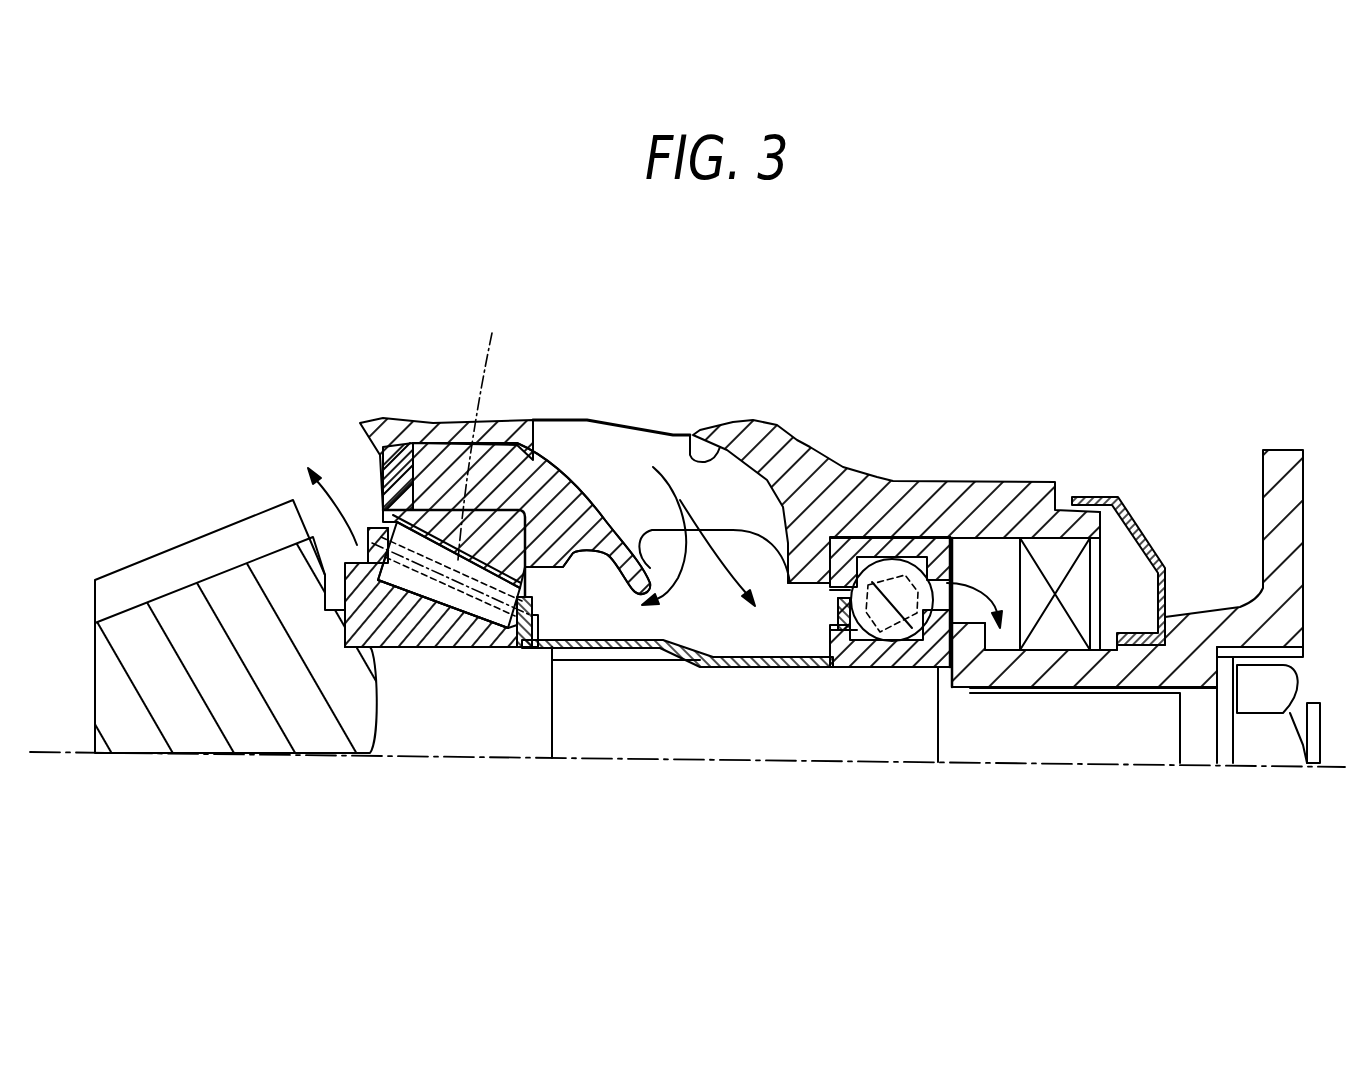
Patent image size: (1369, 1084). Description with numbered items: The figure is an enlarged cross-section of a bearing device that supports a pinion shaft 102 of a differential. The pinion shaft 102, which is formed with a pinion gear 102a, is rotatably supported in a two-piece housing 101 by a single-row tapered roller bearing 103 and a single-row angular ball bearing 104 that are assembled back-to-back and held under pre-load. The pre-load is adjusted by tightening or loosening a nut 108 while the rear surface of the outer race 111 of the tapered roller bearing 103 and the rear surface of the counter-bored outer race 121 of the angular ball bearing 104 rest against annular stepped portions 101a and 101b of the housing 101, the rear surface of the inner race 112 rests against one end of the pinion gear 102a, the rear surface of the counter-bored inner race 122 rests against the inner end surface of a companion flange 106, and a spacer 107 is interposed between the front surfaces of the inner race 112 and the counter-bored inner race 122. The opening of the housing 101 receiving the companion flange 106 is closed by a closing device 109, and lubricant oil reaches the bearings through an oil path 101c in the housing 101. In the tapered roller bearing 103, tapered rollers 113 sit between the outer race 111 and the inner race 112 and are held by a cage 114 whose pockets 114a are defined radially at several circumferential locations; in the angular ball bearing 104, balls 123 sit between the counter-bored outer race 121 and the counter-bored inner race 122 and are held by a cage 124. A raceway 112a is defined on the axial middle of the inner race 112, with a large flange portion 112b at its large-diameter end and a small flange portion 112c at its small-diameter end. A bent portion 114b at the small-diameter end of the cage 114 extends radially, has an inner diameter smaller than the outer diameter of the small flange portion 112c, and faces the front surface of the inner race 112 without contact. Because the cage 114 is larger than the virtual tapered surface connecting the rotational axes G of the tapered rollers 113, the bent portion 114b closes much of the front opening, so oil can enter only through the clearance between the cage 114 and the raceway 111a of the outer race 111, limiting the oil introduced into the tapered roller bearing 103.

The housing 101 is at (818, 434).
The annular stepped portion 101a is at (547, 553).
The annular stepped portion 101b is at (818, 572).
The oil path 101c is at (692, 435).
The pinion shaft 102 is at (722, 740).
The pinion gear 102a is at (150, 578).
The tapered roller bearing 103 is at (394, 678).
The angular ball bearing 104 is at (907, 684).
The companion flange 106 is at (1203, 625).
The spacer 107 is at (690, 650).
The nut 108 is at (1292, 694).
The closing device 109 is at (1048, 557).
The outer race 111 is at (530, 472).
The raceway 111a is at (576, 505).
The inner race 112 is at (420, 650).
The raceway 112a is at (448, 600).
The large flange portion 112b is at (345, 562).
The small flange portion 112c is at (498, 632).
The tapered rollers 113 is at (442, 560).
The cage 114 is at (368, 530).
The pockets 114a is at (425, 505).
The bent portion 114b is at (540, 642).
The counter-bored outer race 121 is at (858, 542).
The counter-bored inner race 122 is at (881, 660).
The balls 123 is at (893, 565).
The cage 124 is at (820, 667).
The rotational axes of the tapered rollers G is at (480, 428).